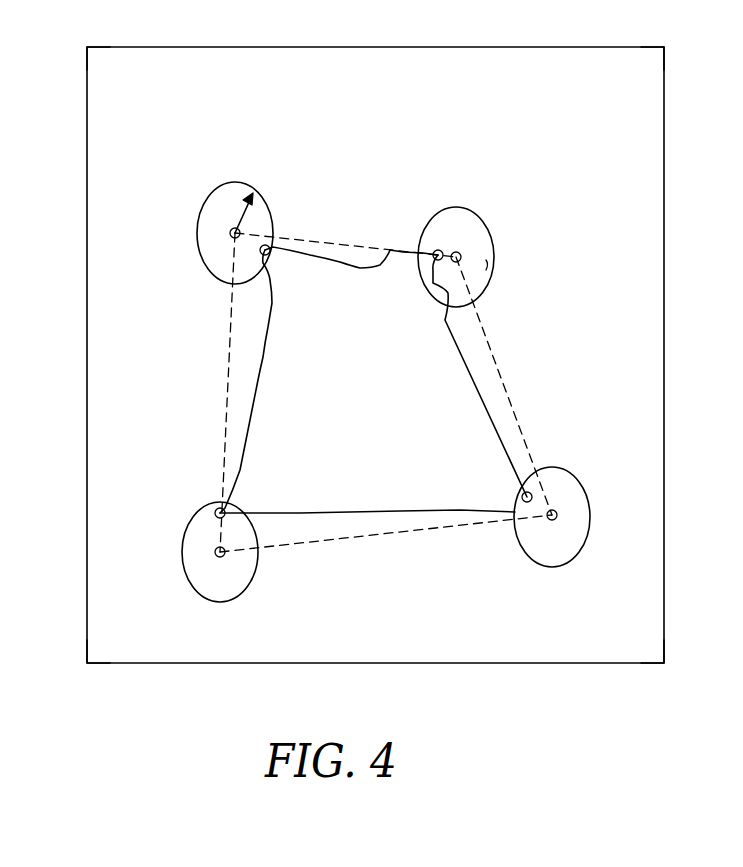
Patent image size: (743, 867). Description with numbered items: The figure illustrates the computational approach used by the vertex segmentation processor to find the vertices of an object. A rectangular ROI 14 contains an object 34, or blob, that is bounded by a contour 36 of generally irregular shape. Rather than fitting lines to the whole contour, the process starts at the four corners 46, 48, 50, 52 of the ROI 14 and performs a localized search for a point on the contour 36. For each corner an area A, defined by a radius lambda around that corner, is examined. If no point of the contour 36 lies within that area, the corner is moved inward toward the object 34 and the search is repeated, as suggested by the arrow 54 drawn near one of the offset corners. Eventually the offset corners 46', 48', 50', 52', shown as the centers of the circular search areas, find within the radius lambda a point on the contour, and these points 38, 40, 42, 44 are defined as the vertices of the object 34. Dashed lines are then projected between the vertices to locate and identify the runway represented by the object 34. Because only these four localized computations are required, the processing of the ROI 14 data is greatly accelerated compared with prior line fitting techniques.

The ROI 14 is at (634, 294).
The object 34 is at (376, 389).
The contour 36 is at (257, 382).
The point on the contour 38 is at (439, 248).
The point on the contour 40 is at (272, 245).
The point on the contour 42 is at (214, 513).
The point on the contour 44 is at (527, 503).
The corner of the ROI 46 is at (673, 46).
The corner of the ROI 48 is at (76, 46).
The corner of the ROI 50 is at (76, 665).
The corner of the ROI 52 is at (673, 666).
The offset corner 46' is at (476, 257).
The offset corner 48' is at (210, 233).
The offset corner 50' is at (196, 552).
The offset corner 52' is at (574, 517).
The rotation direction arrow 54 is at (240, 213).
The area A is at (483, 266).